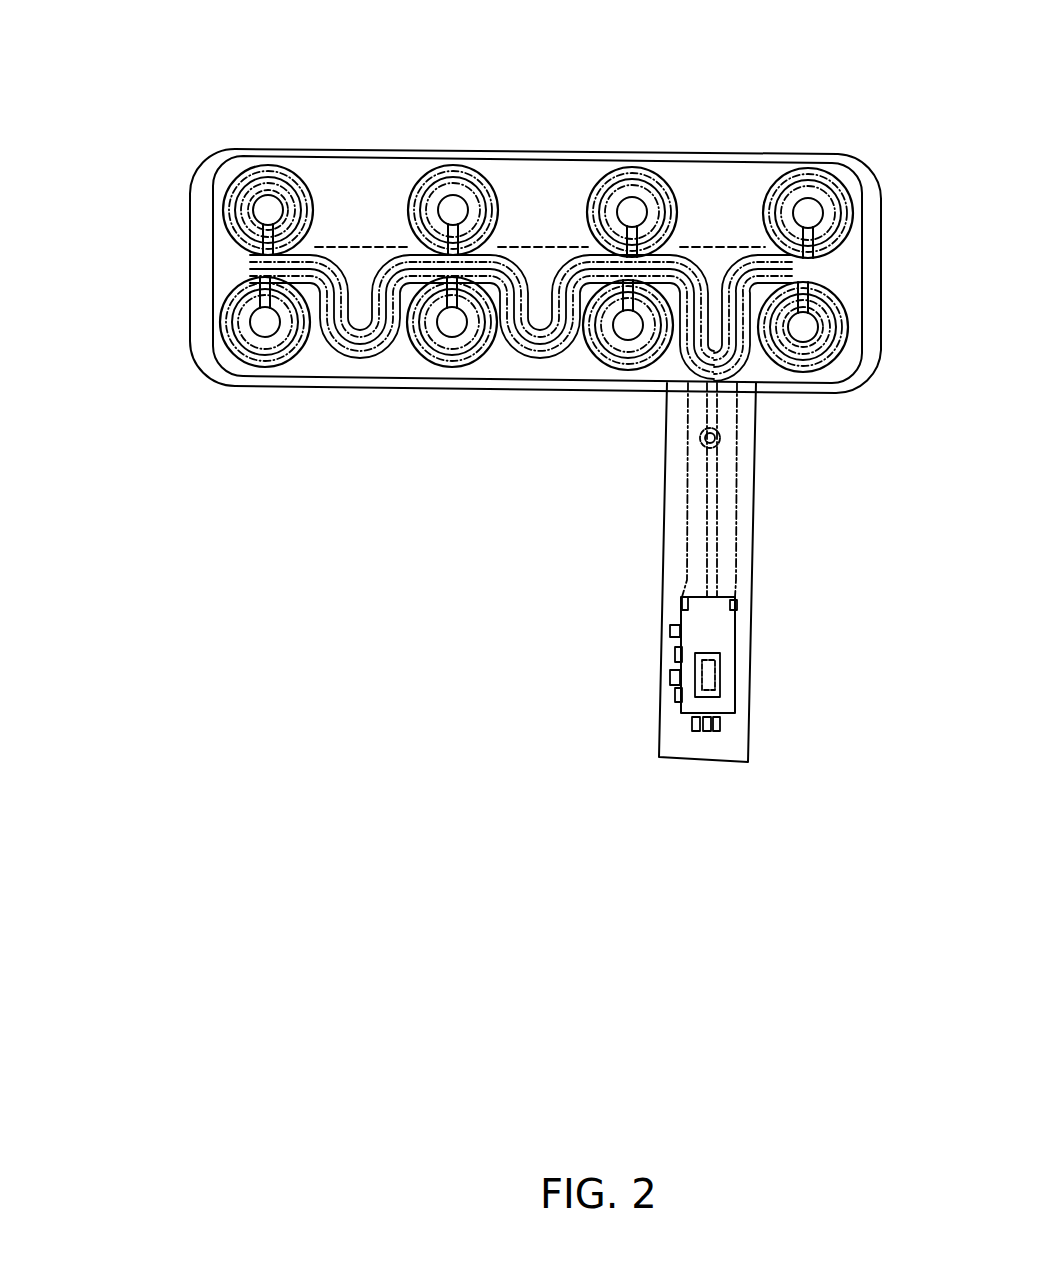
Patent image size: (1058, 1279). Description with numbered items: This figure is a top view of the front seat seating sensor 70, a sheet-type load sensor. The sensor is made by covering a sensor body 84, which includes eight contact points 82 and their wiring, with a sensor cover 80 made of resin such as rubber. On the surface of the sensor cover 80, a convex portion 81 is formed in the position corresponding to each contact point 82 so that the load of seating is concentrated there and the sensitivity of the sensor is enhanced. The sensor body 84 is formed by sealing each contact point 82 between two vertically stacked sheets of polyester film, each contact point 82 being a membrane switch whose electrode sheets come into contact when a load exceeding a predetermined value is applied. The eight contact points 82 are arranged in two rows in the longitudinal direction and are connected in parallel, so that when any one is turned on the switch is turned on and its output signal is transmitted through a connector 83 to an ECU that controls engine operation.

The front seat seating sensor 70 is at (147, 86).
The sensor cover 80 is at (576, 170).
The convex portion 81 is at (244, 169).
The contact point 82 is at (223, 218).
The connector 83 is at (737, 646).
The sensor body 84 is at (508, 362).